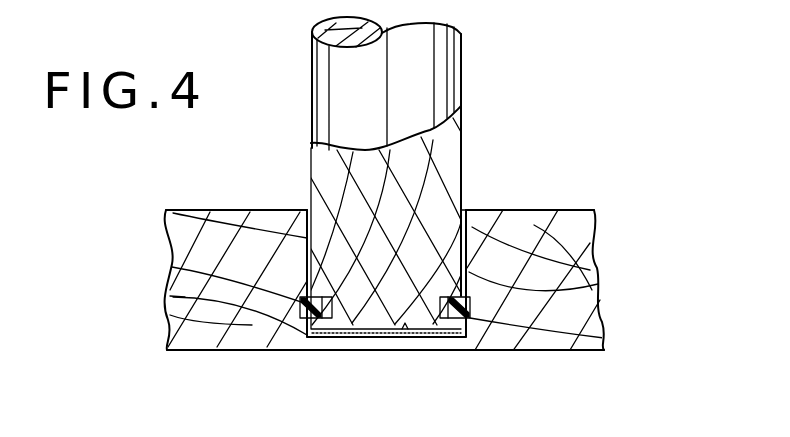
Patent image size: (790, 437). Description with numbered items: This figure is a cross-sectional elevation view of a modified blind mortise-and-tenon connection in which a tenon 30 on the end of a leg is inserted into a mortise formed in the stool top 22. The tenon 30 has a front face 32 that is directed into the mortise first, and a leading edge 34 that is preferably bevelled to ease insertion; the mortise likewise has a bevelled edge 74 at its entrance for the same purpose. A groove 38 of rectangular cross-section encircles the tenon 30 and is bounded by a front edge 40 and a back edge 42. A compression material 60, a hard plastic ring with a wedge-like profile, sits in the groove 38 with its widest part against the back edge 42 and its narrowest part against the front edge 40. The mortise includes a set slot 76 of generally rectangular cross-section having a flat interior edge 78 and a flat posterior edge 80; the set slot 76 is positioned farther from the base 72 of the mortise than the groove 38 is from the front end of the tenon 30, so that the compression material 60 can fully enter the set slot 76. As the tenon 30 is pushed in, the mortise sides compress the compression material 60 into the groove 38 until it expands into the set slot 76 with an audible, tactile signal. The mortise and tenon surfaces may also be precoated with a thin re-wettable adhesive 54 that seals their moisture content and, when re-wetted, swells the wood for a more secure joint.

The stool top 22 is at (572, 220).
The tenon 30 is at (436, 84).
The front face 32 is at (366, 338).
The leading edge 34 is at (313, 331).
The groove 38 is at (472, 228).
The front edge 40 is at (175, 297).
The back edge 42 is at (305, 298).
The re-wettable adhesive 54 is at (463, 336).
The compression material 60 is at (473, 312).
The base 72 is at (407, 327).
The bevelled edge 74 is at (465, 208).
The set slot 76 is at (300, 296).
The flat interior edge 78 is at (470, 302).
The flat posterior edge 80 is at (510, 350).